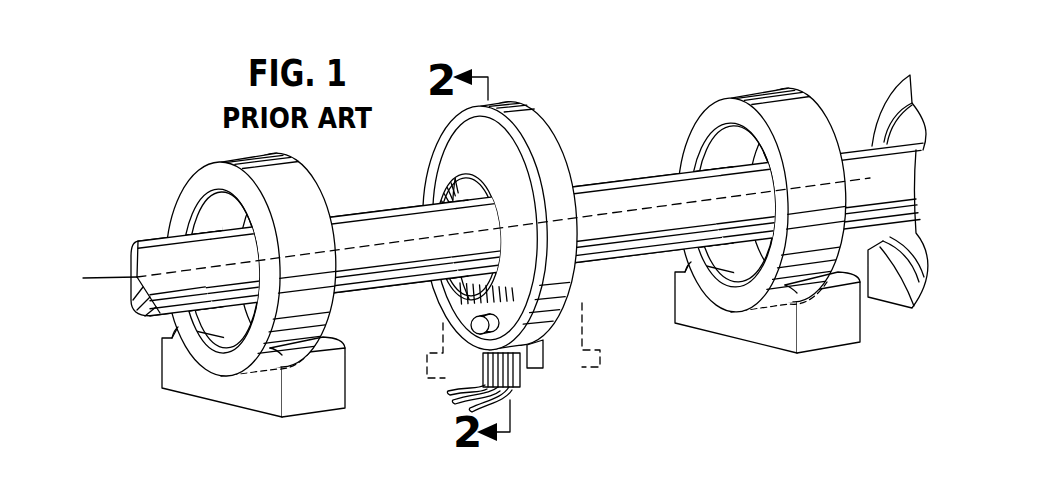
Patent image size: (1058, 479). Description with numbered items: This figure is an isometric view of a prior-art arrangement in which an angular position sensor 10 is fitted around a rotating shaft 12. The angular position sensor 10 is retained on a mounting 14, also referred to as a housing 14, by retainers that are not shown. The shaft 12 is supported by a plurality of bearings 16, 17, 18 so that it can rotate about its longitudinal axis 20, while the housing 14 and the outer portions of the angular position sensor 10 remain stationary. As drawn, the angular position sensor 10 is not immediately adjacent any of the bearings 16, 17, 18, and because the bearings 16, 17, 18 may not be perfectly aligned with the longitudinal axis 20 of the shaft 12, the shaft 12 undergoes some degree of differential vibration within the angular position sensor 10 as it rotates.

The angular position sensor 10 is at (557, 141).
The shaft 12 is at (661, 173).
The mounting 14 is at (585, 323).
The bearing 16 is at (174, 189).
The bearing 17 is at (820, 113).
The bearing 18 is at (897, 106).
The longitudinal axis 20 is at (118, 272).